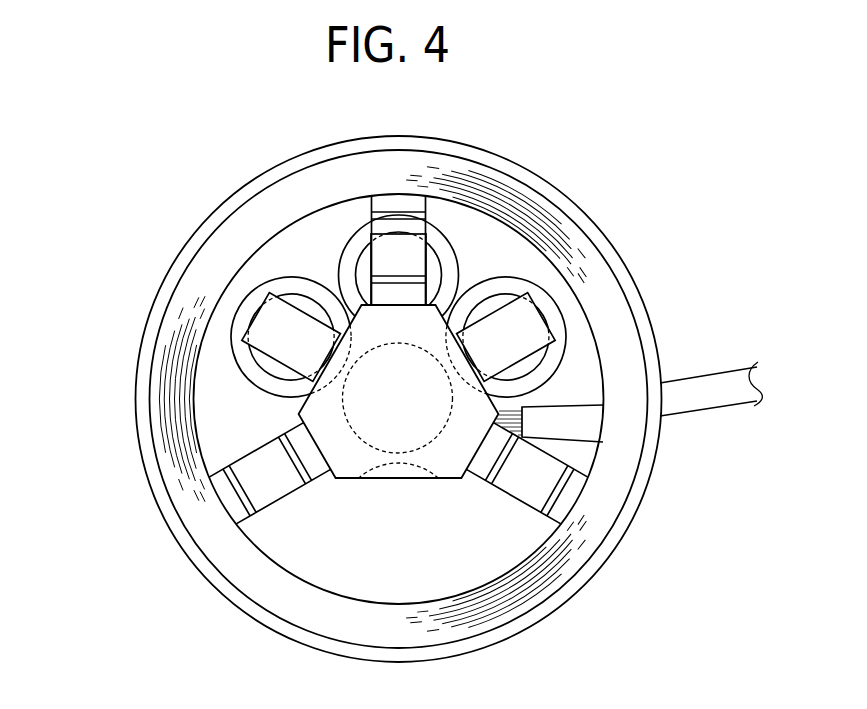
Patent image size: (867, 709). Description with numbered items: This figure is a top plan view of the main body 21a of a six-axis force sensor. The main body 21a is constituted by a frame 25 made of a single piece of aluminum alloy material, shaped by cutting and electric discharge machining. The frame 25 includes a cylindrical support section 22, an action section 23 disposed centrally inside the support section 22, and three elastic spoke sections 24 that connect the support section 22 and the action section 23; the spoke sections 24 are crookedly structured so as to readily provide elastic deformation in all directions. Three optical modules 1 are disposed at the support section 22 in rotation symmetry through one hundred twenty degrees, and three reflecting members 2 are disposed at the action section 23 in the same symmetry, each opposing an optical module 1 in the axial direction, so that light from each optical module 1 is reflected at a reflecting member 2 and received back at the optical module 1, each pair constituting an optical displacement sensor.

The optical module 1 is at (412, 376).
The reflecting member 2 is at (500, 323).
The main body 21a is at (396, 376).
The support section 22 is at (237, 562).
The action section 23 is at (418, 322).
The elastic spoke section 24 is at (388, 258).
The frame 25 is at (660, 452).